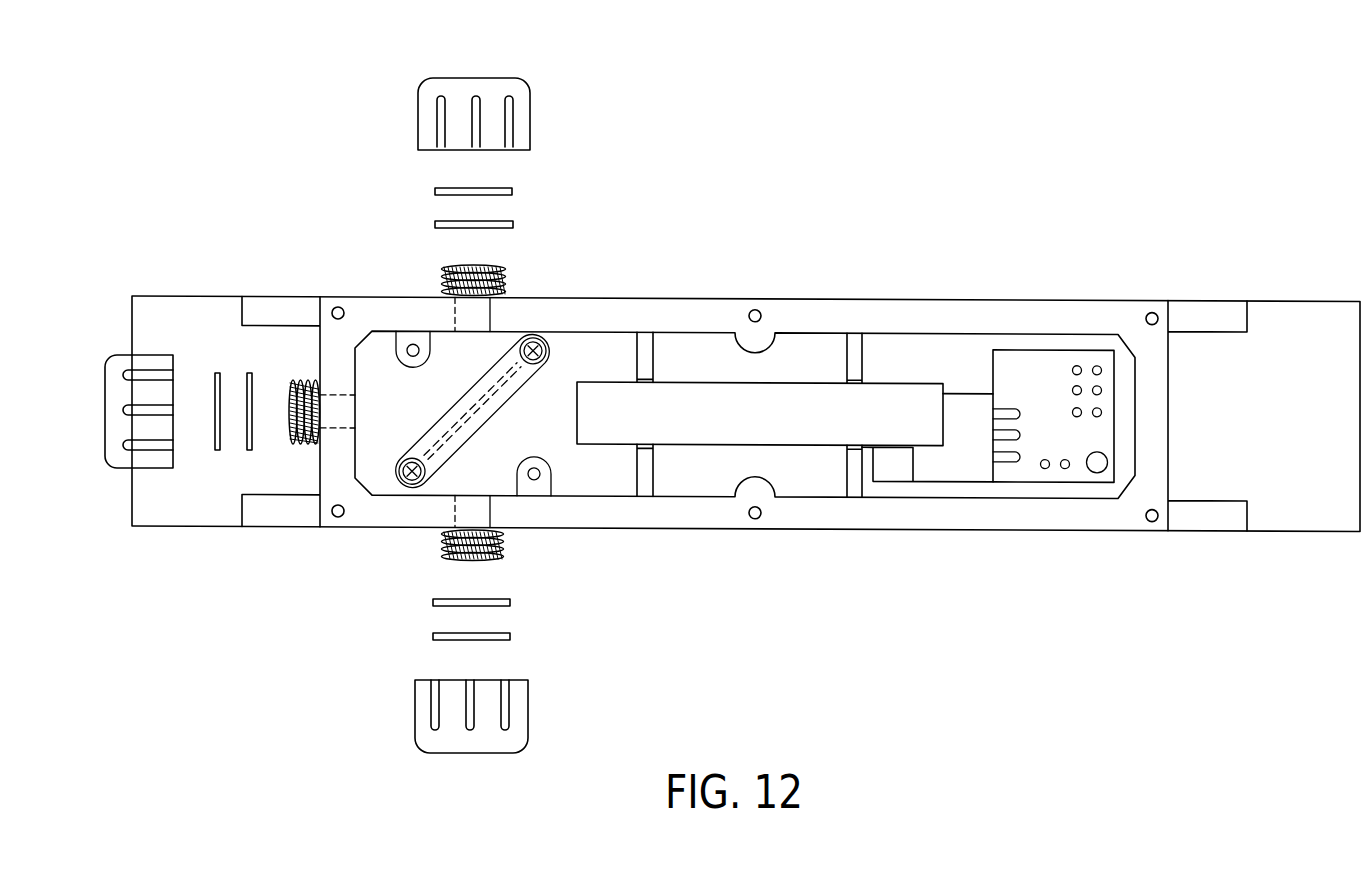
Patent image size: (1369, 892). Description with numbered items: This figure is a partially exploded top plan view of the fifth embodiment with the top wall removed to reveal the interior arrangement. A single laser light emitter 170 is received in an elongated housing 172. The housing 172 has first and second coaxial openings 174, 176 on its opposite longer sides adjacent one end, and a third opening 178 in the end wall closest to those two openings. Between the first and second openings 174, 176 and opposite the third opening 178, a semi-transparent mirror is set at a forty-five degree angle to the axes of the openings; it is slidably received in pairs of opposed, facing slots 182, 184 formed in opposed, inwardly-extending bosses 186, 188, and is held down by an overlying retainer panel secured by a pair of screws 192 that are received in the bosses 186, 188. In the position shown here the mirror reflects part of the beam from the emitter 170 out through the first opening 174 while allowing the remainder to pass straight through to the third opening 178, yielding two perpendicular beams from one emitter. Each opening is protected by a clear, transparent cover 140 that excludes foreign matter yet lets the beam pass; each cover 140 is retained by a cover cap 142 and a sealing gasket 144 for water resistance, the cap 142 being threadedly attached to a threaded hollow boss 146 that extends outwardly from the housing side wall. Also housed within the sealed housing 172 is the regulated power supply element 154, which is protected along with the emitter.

The cover 140 is at (434, 189).
The cover cap 142 is at (531, 128).
The sealing gasket 144 is at (515, 222).
The threaded hollow boss 146 is at (508, 276).
The regulated power supply element 154 is at (996, 365).
The laser light emitter 170 is at (692, 376).
The housing 172 is at (1031, 531).
The first opening 174 is at (494, 513).
The second opening 176 is at (493, 312).
The third opening 178 is at (338, 428).
The slot 182 is at (423, 360).
The slot 184 is at (522, 460).
The boss 186 is at (400, 333).
The boss 188 is at (546, 480).
The screws 192 is at (548, 350).